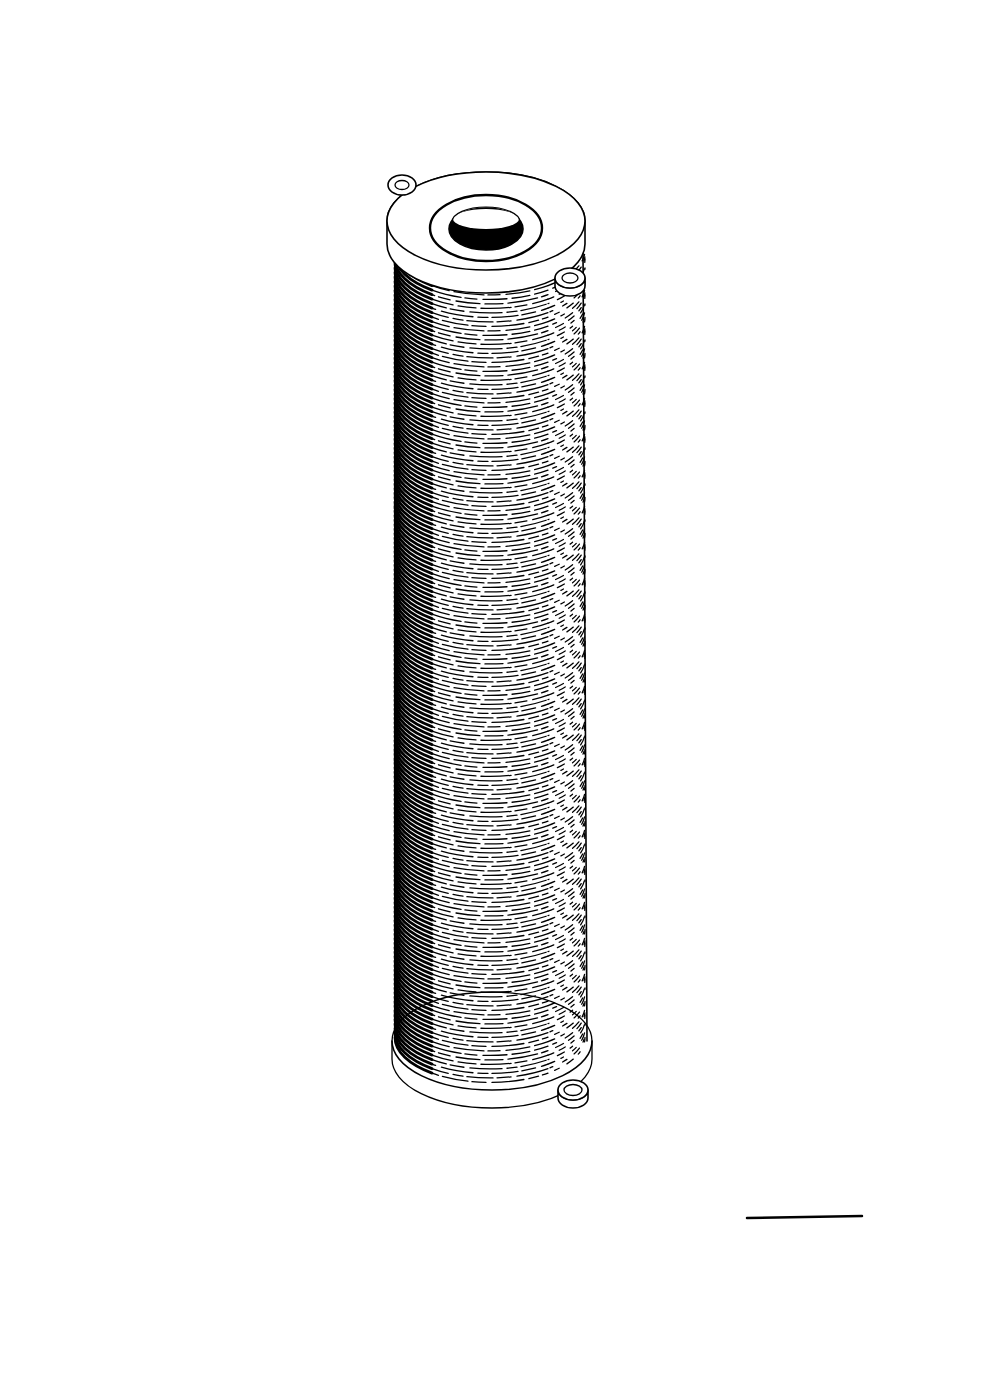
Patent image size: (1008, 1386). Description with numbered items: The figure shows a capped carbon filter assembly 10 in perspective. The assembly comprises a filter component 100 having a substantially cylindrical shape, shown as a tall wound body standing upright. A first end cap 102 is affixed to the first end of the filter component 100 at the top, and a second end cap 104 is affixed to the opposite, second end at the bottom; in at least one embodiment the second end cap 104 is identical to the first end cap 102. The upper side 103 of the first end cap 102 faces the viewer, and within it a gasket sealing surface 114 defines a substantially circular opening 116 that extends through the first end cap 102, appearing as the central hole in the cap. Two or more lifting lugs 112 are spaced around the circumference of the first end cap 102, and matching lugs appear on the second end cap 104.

The capped carbon filter assembly 10 is at (157, 262).
The filter component 100 is at (570, 485).
The first end cap 102 is at (582, 232).
The upper side 103 is at (560, 212).
The second end cap 104 is at (590, 1057).
The lifting lugs 112 is at (390, 190).
The gasket sealing surface 114 is at (507, 217).
The circular opening 116 is at (488, 228).